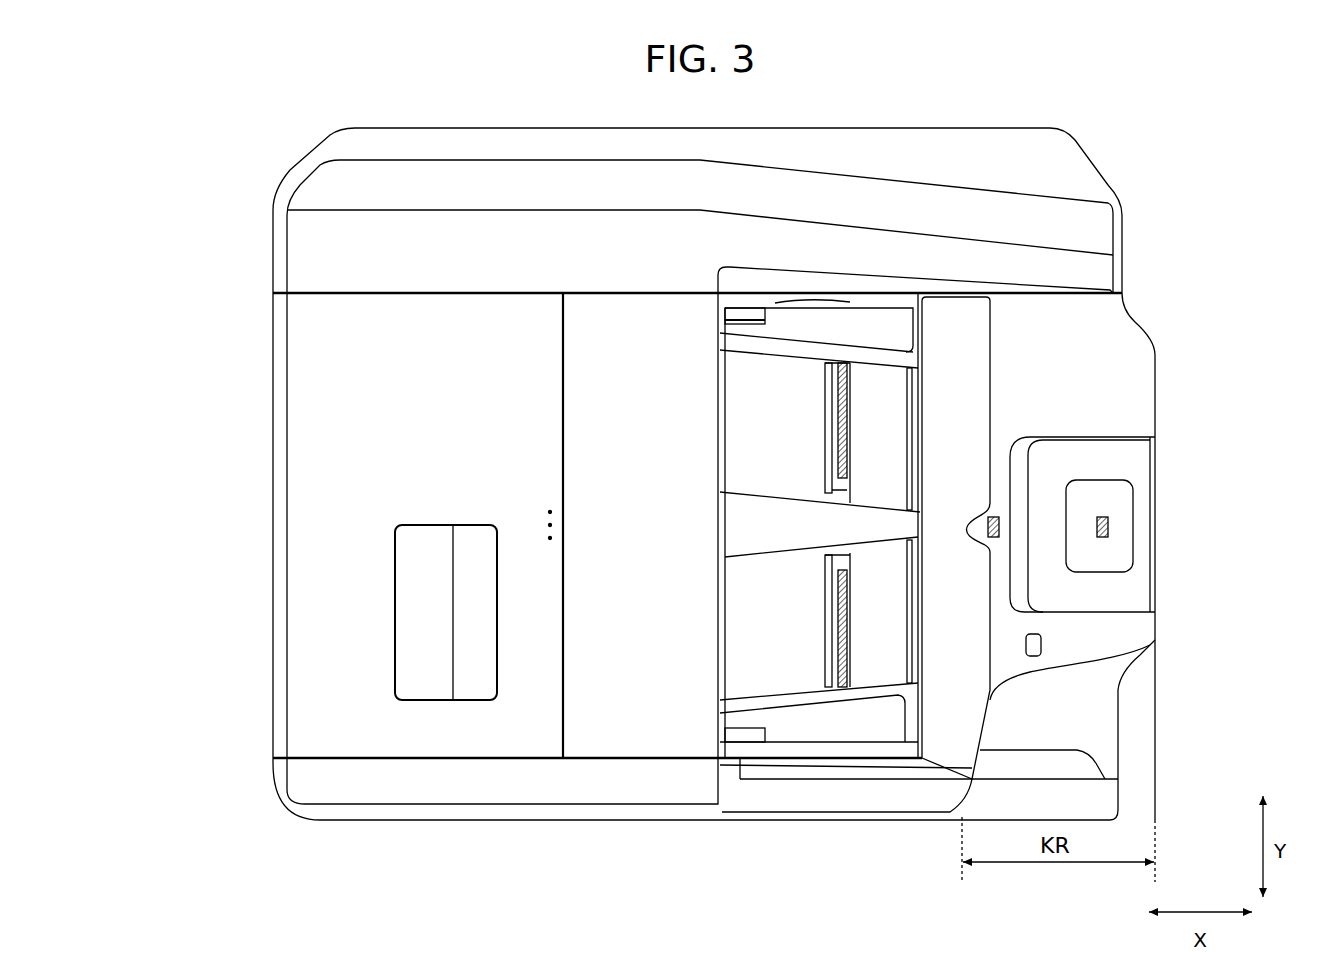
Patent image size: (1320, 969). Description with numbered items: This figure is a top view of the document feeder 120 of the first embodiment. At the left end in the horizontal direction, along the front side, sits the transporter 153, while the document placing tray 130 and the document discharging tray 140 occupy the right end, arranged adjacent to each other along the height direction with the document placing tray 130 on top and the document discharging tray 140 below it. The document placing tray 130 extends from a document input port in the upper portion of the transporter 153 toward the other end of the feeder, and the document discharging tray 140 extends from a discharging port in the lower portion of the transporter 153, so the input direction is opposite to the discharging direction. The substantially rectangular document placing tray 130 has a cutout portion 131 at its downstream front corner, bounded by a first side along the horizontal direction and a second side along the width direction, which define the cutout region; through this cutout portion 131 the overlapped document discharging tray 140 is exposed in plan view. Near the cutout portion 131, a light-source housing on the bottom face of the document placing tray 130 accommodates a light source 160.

The document feeder 120 is at (1127, 176).
The document placing tray 130 is at (1103, 347).
The cutout portion 131 is at (1050, 672).
The document discharging tray 140 is at (1110, 674).
The transporter 153 is at (327, 462).
The light source 160 is at (1043, 645).